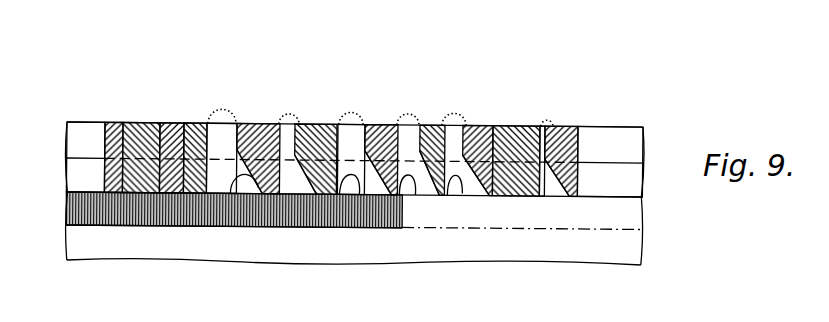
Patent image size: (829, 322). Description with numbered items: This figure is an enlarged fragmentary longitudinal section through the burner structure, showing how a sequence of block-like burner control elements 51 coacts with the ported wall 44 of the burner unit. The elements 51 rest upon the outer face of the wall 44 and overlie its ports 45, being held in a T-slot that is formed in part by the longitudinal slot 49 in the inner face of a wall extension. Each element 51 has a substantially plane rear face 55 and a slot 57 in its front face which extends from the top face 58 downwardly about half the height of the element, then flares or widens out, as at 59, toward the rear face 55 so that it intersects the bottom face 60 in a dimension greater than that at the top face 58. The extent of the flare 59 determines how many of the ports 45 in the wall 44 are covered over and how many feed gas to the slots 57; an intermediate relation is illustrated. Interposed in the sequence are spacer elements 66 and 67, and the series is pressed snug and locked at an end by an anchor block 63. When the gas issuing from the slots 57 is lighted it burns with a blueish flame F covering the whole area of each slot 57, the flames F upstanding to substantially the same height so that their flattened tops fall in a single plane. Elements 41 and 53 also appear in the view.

The base member 41 is at (583, 267).
The wall 44 is at (598, 229).
The ports 45 is at (342, 183).
The slot 49 is at (640, 170).
The element 51 is at (246, 121).
The conductive layer 53 is at (644, 191).
The rear face 55 is at (354, 226).
The slot 57 is at (215, 135).
The top face 58 is at (260, 120).
The flare 59 is at (232, 194).
The bottom face 60 is at (271, 226).
The anchor block 63 is at (115, 121).
The spacer element 66 is at (190, 121).
The spacer element 67 is at (511, 129).
The flame F is at (222, 107).